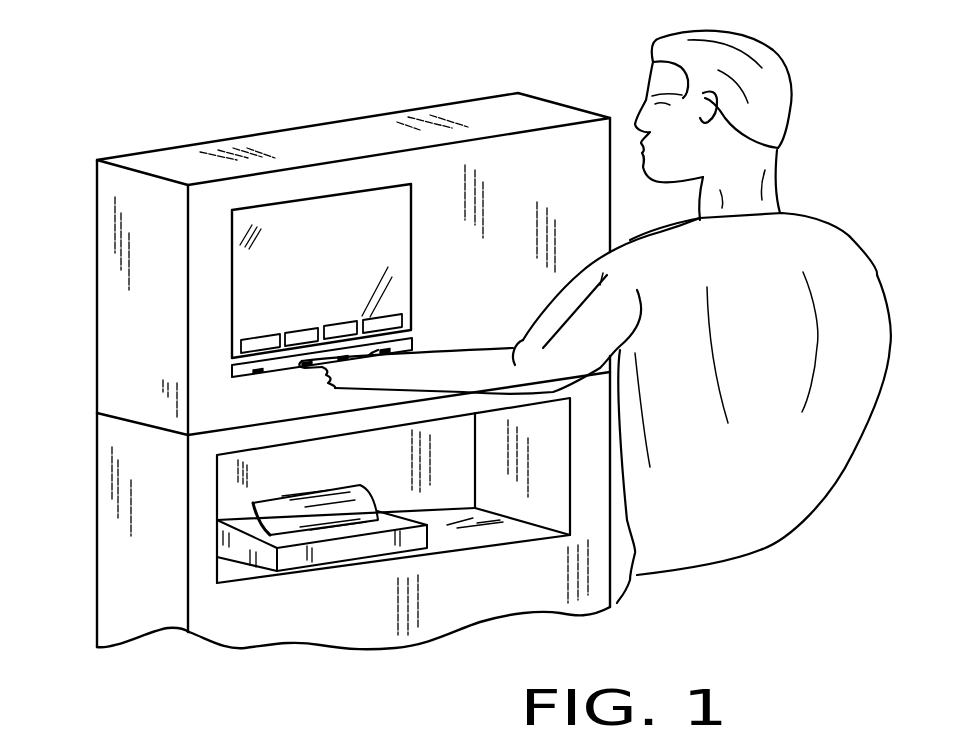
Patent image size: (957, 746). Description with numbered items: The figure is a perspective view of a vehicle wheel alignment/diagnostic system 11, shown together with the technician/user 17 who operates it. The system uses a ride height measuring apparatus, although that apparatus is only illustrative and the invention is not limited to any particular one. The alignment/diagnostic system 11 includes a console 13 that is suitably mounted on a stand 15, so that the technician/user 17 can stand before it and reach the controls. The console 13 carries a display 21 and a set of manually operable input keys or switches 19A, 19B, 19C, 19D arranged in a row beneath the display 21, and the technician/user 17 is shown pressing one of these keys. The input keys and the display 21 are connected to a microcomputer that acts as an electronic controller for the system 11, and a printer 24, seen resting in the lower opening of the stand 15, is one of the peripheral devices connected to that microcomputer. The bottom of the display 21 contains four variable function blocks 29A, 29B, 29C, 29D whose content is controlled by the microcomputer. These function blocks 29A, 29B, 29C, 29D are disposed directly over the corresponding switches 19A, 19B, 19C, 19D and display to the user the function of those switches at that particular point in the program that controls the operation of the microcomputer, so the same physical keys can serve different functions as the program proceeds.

The vehicle wheel alignment/diagnostic system 11 is at (237, 73).
The console 13 is at (458, 102).
The stand 15 is at (95, 513).
The technician/user 17 is at (773, 52).
The input key or switch 19A is at (252, 370).
The input key or switch 19B is at (306, 365).
The input key or switch 19C is at (362, 343).
The input key or switch 19D is at (402, 338).
The display 21 is at (332, 233).
The printer 24 is at (338, 553).
The variable function block 29A is at (253, 345).
The variable function block 29B is at (303, 333).
The variable function block 29C is at (340, 323).
The variable function block 29D is at (380, 318).